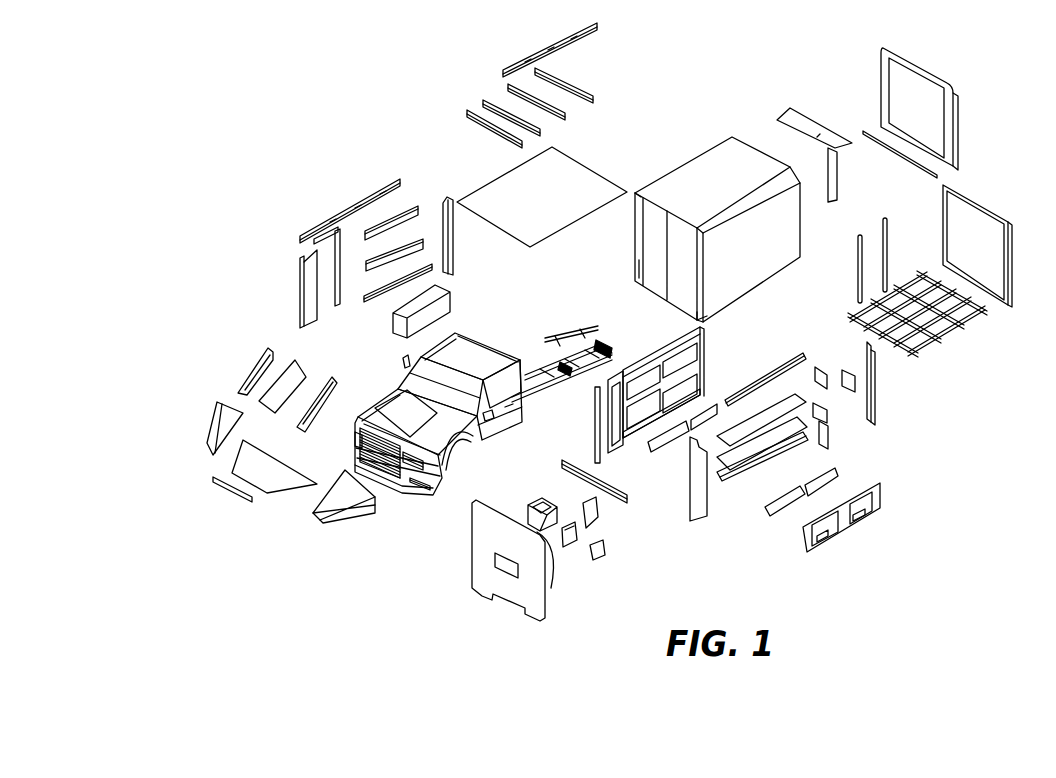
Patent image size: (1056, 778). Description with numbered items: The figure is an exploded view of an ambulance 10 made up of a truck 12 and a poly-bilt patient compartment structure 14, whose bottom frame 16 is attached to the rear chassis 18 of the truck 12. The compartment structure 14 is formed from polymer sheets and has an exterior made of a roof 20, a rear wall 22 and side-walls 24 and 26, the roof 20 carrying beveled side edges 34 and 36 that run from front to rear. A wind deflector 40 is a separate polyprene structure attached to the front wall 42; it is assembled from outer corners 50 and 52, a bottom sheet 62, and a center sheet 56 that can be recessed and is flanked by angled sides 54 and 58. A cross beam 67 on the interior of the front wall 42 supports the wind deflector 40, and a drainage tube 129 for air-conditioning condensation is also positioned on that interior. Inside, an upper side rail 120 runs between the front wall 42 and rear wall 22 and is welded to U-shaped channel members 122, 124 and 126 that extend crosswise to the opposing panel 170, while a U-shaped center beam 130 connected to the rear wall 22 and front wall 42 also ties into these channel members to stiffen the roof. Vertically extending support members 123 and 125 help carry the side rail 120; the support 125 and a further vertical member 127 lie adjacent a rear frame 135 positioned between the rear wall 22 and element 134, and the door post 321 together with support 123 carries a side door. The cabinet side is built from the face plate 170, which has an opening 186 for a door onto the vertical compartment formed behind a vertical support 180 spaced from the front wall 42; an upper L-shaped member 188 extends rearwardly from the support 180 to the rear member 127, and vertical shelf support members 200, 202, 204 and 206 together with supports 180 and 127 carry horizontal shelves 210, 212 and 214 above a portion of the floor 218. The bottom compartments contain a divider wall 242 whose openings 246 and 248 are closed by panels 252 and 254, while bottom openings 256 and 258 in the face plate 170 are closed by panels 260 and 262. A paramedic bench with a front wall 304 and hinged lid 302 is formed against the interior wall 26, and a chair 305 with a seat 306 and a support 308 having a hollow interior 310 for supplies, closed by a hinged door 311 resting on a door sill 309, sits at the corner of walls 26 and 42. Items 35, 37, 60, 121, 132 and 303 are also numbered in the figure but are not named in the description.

The ambulance 10 is at (282, 151).
The truck 12 is at (417, 501).
The poly-bilt patient compartment structure 14 is at (708, 58).
The bottom frame 16 is at (944, 340).
The rear chassis 18 is at (552, 338).
The roof 20 is at (709, 191).
The rear wall 22 is at (956, 122).
The side-wall 24 is at (740, 259).
The side-wall 26 is at (635, 235).
The beveled side edge 34 is at (792, 175).
The lower corner edge 35 is at (697, 316).
The beveled side edge 36 is at (636, 191).
The front wall rib 37 is at (637, 270).
The wind deflector 40 is at (201, 377).
The front wall 42 is at (479, 542).
The outer corner 50 is at (206, 442).
The outer corner 52 is at (340, 525).
The angled side 54 is at (250, 372).
The center sheet 56 is at (296, 363).
The angled side 58 is at (326, 384).
The trim strip 60 is at (217, 487).
The bottom sheet 62 is at (287, 492).
The cross beam 67 is at (562, 463).
The upper side rail 120 is at (366, 193).
The side rail 121 is at (410, 207).
The U-shaped channel member 122 is at (486, 102).
The vertically extending support member 123 is at (320, 232).
The U-shaped channel member 124 is at (565, 116).
The vertically extending support member 125 is at (447, 198).
The U-shaped channel member 126 is at (568, 80).
The vertical member 127 is at (876, 390).
The drainage tube 129 is at (595, 420).
The U-shaped center beam 130 is at (558, 36).
The cross member 132 is at (468, 118).
The unnamed element 134 is at (777, 121).
The rear frame 135 is at (1009, 218).
The face plate 170 is at (702, 330).
The vertical support 180 is at (697, 513).
The opening 186 is at (620, 375).
The upper L-shaped member 188 is at (766, 370).
The vertical shelf support member 200 is at (817, 366).
The vertical shelf support member 202 is at (846, 369).
The vertical shelf support member 204 is at (828, 418).
The vertical shelf support member 206 is at (830, 443).
The horizontally extending shelf 210 is at (764, 418).
The horizontally extending shelf 212 is at (717, 461).
The horizontally extending shelf 214 is at (762, 460).
The floor 218 is at (527, 202).
The divider wall 242 is at (835, 532).
The opening 246 is at (814, 545).
The opening 248 is at (862, 500).
The panel 252 is at (766, 510).
The panel 254 is at (837, 470).
The bottom opening 256 is at (628, 445).
The bottom opening 258 is at (683, 392).
The panel 260 is at (650, 450).
The panel 262 is at (705, 407).
The hinged lid 302 is at (366, 266).
The support rail 303 is at (432, 268).
The front wall 304 is at (450, 300).
The chair 305 is at (531, 494).
The seat 306 is at (548, 501).
The support 308 is at (599, 515).
The door sill 309 is at (568, 546).
The hollow interior 310 is at (553, 567).
The hinged door 311 is at (604, 556).
The door post 321 is at (299, 265).